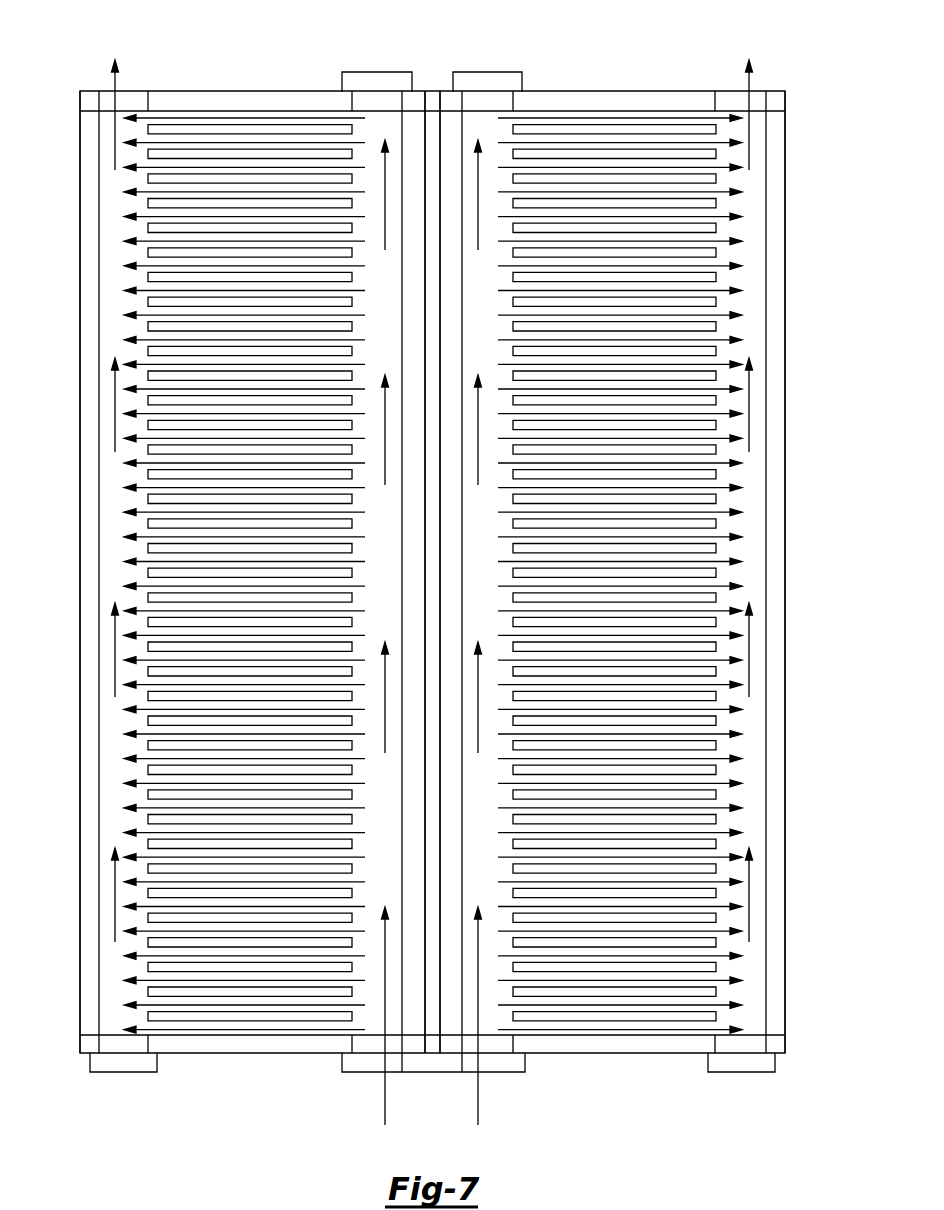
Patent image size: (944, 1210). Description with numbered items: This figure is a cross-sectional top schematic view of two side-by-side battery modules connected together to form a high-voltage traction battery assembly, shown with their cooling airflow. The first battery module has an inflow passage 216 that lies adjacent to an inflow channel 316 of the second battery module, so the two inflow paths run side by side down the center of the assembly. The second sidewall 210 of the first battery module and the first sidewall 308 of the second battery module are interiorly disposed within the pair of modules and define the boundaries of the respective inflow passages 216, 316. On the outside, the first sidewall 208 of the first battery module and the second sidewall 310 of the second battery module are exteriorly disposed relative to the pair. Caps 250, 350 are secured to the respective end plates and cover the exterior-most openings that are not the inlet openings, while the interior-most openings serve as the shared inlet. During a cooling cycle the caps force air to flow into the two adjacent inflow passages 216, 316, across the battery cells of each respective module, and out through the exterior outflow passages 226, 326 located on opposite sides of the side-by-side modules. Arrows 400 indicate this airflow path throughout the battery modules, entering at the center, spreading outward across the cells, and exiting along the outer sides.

The cap 350 is at (377, 80).
The cap 250 is at (488, 80).
The exterior outflow passage 326 is at (109, 153).
The exterior outflow passage 226 is at (757, 153).
The second sidewall 310 is at (90, 737).
The first sidewall 208 is at (773, 737).
The arrows 400 is at (398, 738).
The first sidewall 308 is at (417, 1018).
The second sidewall 210 is at (448, 1018).
The inflow channel 316 is at (377, 1010).
The inflow passage 216 is at (487, 1010).